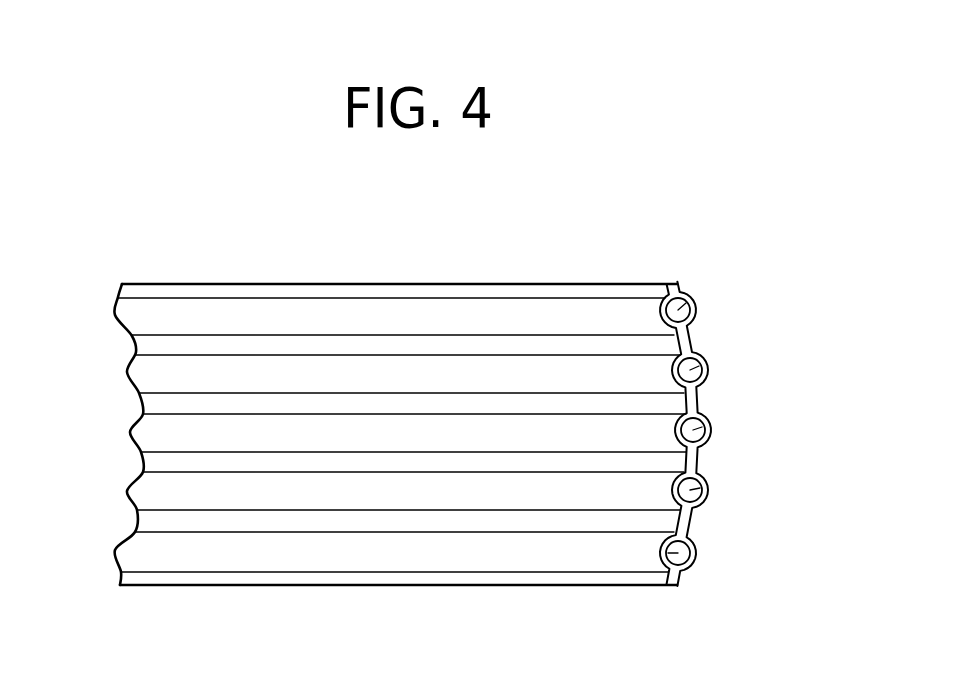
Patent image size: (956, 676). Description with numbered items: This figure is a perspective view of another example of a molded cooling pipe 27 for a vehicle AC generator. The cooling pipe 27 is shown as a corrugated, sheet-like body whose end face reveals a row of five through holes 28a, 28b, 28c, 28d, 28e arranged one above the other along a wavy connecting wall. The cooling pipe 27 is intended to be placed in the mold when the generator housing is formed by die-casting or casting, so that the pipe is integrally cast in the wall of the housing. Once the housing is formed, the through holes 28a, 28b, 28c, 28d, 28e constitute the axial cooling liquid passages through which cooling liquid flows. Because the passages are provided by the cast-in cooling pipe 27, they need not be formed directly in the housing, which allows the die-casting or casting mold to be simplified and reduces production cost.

The cooling pipe 27 is at (365, 283).
The through hole 28a is at (697, 304).
The through hole 28b is at (708, 366).
The through hole 28c is at (711, 428).
The through hole 28d is at (703, 487).
The through hole 28e is at (692, 558).